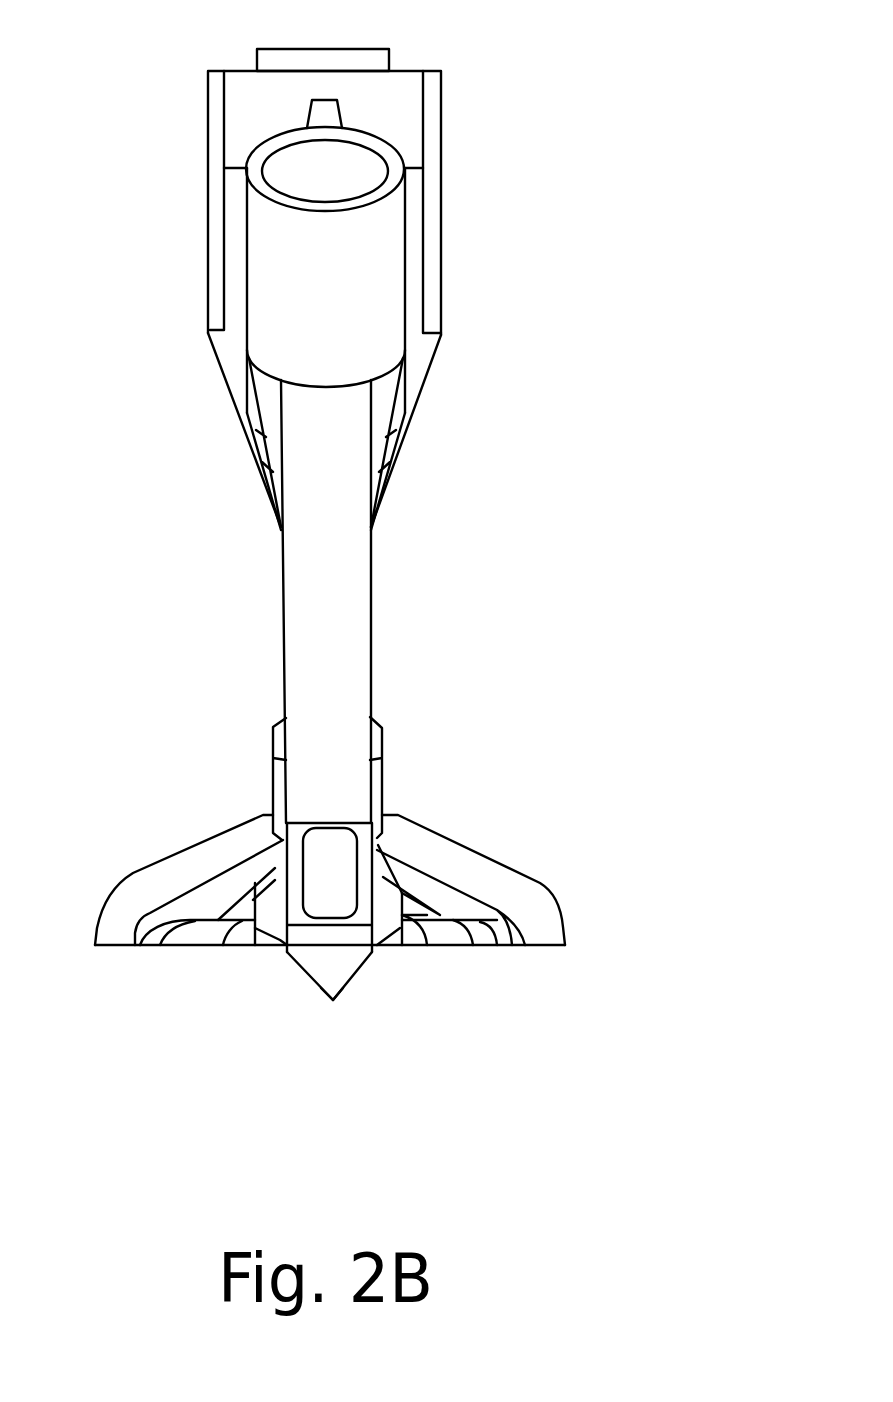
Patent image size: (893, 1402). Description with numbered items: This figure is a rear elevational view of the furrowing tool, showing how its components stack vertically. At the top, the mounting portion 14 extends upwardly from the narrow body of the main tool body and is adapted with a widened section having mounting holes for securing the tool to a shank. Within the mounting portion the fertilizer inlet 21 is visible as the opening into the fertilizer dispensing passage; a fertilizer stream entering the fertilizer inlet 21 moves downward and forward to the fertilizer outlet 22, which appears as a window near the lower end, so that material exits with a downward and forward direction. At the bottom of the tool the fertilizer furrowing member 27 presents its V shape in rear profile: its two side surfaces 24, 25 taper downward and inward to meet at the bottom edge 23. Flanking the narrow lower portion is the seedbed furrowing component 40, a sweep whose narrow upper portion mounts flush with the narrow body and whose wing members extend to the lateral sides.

The mounting portion 14 is at (208, 273).
The fertilizer inlet 21 is at (347, 163).
The fertilizer outlet 22 is at (330, 853).
The bottom edge 23 is at (333, 1000).
The side surface 24 is at (353, 978).
The side surface 25 is at (308, 972).
The fertilizer furrowing member 27 is at (323, 963).
The seedbed furrowing component 40 is at (195, 847).